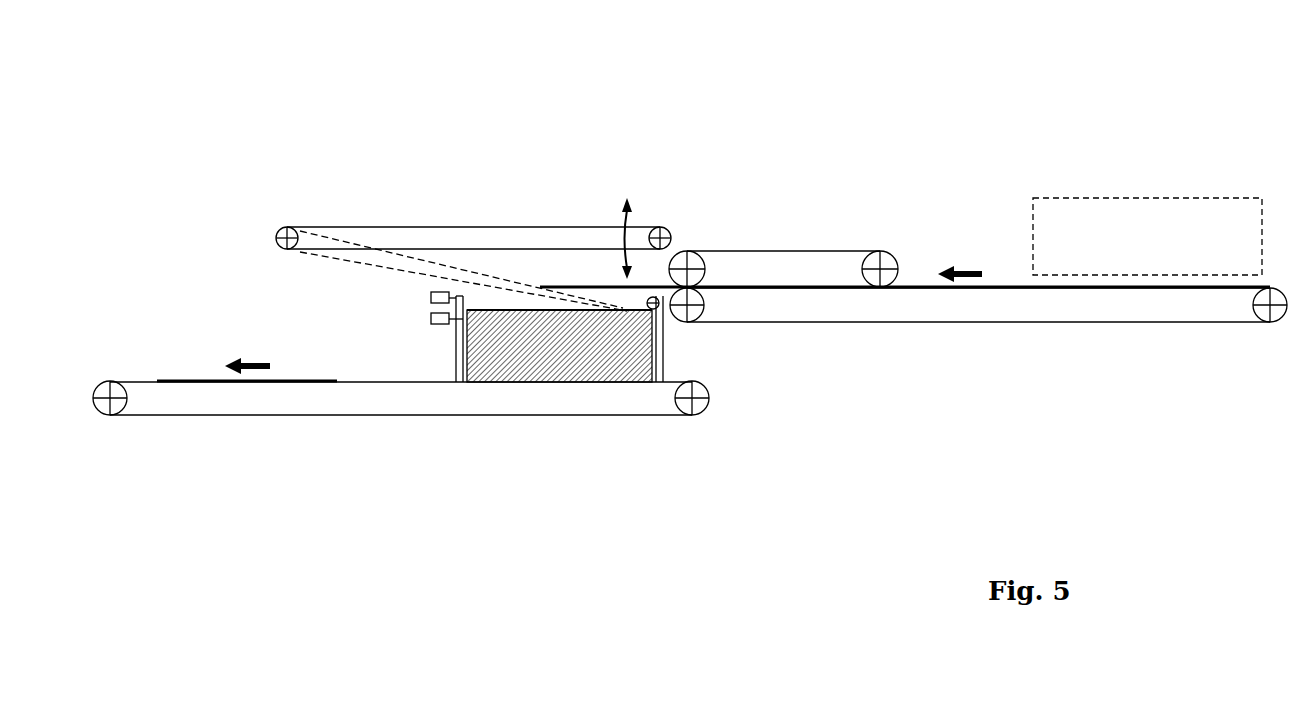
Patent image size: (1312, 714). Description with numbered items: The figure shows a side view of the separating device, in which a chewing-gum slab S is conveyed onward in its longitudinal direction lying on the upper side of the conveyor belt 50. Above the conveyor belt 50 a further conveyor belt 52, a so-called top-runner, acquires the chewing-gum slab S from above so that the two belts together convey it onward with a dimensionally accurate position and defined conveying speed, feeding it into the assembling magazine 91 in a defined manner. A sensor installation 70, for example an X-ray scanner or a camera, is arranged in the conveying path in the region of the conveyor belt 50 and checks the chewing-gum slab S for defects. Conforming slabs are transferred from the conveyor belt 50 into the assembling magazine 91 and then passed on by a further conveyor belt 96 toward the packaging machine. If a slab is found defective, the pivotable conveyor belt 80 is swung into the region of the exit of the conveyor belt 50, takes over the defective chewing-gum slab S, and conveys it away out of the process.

The conveyor belt 50 is at (1023, 310).
The conveyor belt 52 is at (785, 268).
The sensor installation 70 is at (1117, 223).
The discharge-conveying installation 80 is at (510, 232).
The assembling magazine 91 is at (655, 343).
The conveyor belt 96 is at (333, 398).
The chewing-gum slab S is at (187, 382).